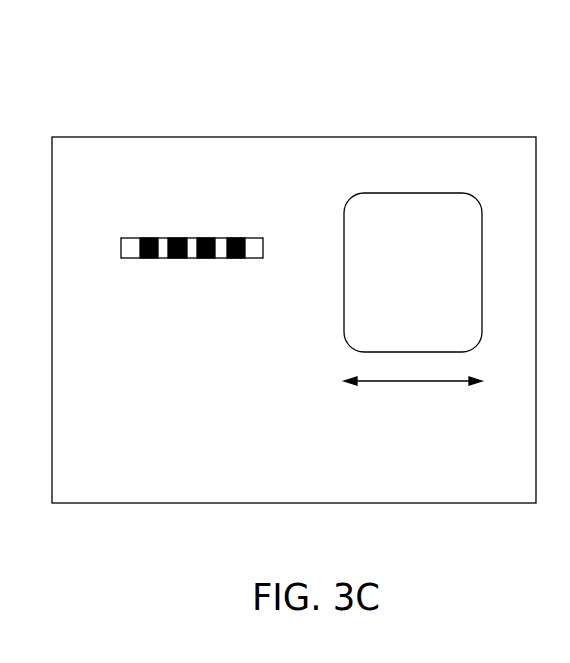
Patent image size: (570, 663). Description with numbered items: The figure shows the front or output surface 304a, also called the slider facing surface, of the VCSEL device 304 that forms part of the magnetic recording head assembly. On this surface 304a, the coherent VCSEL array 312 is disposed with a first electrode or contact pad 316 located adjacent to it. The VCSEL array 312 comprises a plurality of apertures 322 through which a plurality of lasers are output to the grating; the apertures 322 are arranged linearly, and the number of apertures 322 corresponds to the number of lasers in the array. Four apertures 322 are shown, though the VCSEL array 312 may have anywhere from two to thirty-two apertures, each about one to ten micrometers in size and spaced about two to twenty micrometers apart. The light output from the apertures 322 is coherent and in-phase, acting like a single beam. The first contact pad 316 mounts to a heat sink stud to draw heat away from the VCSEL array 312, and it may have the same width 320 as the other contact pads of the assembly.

The VCSEL device 304 is at (207, 60).
The front or output surface 304a is at (303, 472).
The VCSEL array 312 is at (130, 238).
The apertures 322 is at (152, 238).
The first electrode or contact pad 316 is at (438, 285).
The width 320 is at (413, 400).